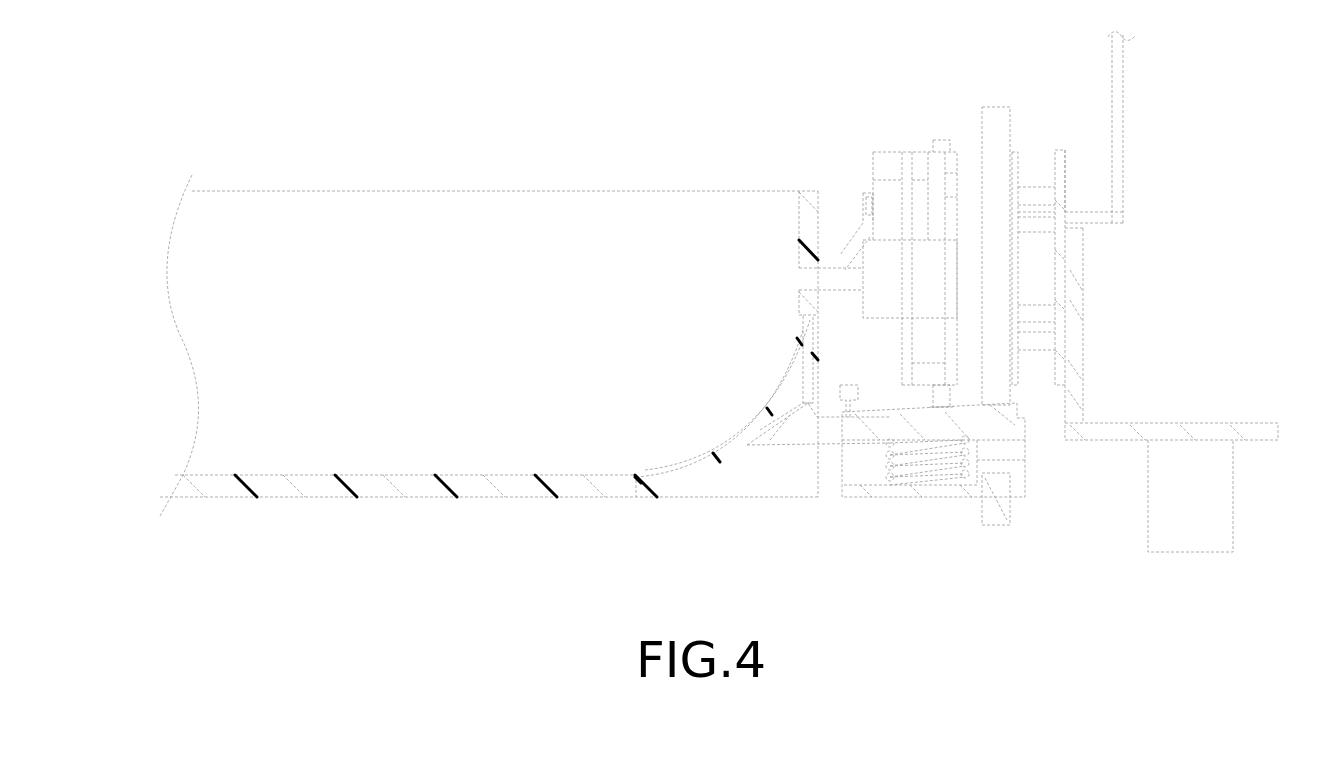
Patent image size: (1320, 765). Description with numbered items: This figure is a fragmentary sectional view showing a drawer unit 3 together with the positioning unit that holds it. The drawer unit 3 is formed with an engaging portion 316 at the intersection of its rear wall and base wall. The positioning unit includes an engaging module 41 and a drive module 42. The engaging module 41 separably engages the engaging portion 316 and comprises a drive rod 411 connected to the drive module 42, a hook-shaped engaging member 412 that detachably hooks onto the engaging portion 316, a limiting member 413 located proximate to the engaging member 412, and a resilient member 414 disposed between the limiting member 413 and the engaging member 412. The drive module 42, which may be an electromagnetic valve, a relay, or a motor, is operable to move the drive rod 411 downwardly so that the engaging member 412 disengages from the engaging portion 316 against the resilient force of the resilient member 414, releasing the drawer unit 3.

The drawer unit 3 is at (418, 182).
The engaging portion 316 is at (813, 370).
The engaging module 41 is at (880, 497).
The drive rod 411 is at (945, 392).
The engaging member 412 is at (783, 440).
The limiting member 413 is at (947, 497).
The resilient member 414 is at (932, 473).
The drive module 42 is at (887, 152).